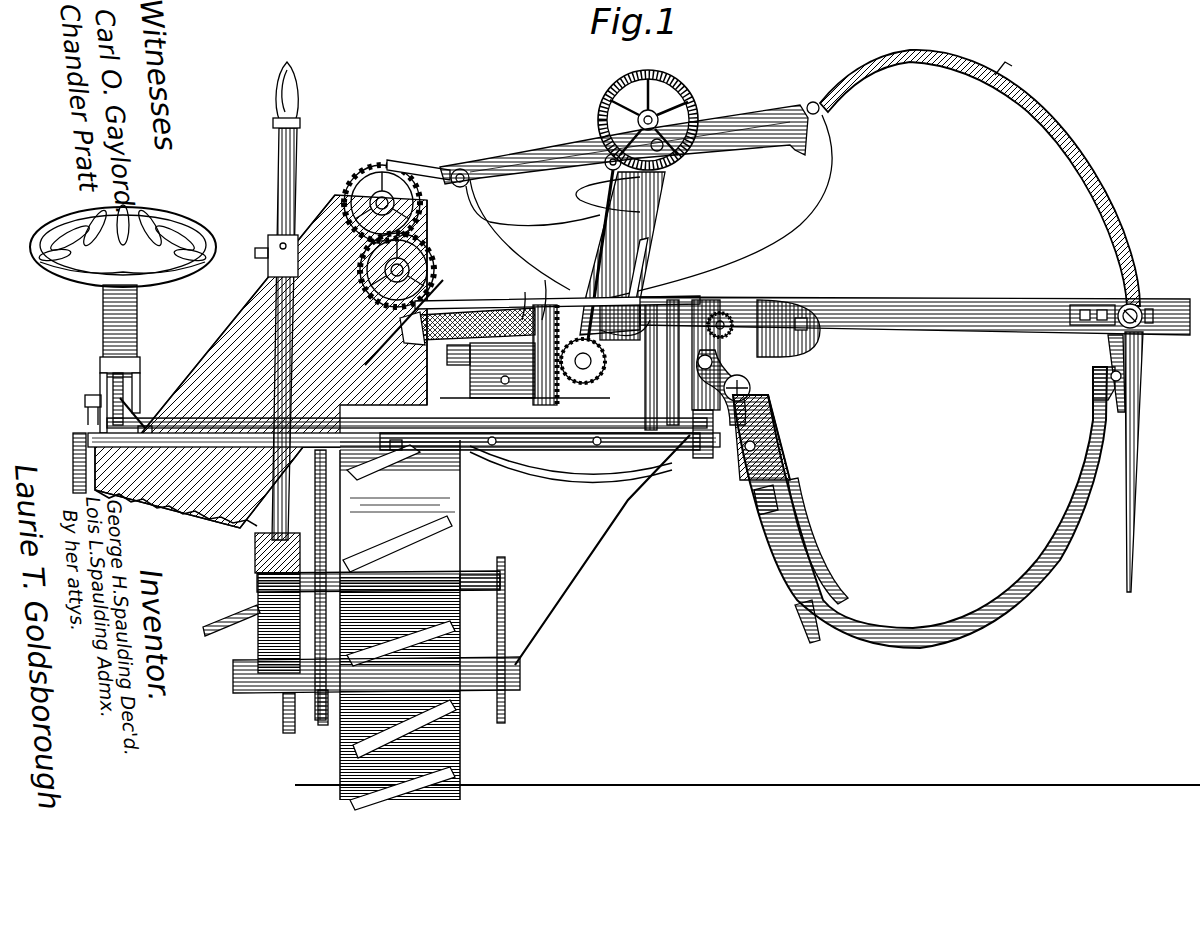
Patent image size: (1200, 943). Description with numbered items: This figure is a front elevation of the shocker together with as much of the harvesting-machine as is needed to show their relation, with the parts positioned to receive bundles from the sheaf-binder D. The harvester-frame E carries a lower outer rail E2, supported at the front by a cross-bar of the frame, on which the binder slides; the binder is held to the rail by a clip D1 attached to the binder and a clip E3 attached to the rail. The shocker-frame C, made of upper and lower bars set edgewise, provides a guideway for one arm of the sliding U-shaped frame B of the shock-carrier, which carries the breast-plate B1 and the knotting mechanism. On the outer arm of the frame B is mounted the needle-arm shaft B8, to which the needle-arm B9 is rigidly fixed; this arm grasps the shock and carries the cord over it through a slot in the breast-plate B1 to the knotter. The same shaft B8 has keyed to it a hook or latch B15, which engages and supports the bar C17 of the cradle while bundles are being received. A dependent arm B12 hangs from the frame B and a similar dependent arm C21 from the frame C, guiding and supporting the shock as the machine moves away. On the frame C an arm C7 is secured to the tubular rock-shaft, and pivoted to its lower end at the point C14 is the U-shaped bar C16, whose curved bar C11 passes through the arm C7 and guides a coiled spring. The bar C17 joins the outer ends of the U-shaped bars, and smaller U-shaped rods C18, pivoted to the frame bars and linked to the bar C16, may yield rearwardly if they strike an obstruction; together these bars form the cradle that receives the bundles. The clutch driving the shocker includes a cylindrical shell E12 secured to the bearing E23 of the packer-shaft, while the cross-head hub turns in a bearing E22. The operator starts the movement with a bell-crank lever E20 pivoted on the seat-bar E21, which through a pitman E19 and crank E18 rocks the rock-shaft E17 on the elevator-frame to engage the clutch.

The bell-crank lever E20 is at (104, 364).
The crank E18 is at (98, 408).
The rock-shaft E17 is at (148, 428).
The harvester-frame E is at (467, 448).
The clip D1 is at (412, 318).
The sheaf-binder D is at (700, 410).
The pitman E19 is at (406, 336).
The cylindrical shell E12 is at (543, 317).
The bearing E22 is at (500, 398).
The bearing E23 is at (567, 415).
The clip E3 is at (685, 422).
The lower outer rail E2 is at (697, 463).
The seat-bar E21 is at (600, 538).
The shocker-frame C is at (727, 323).
The breast-plate B1 is at (783, 333).
The U-shaped frame B is at (757, 343).
The needle-arm shaft B8 is at (1132, 317).
The needle-arm B9 is at (1040, 118).
The dependent arm B12 is at (1140, 447).
The hook or latch B15 is at (1133, 352).
The bar C17 is at (1113, 370).
The U-shaped bar C16 is at (963, 636).
The dependent arm C21 is at (762, 407).
The arm C7 is at (765, 427).
The curved bar C11 is at (755, 448).
The pivot point C14 is at (760, 507).
The smaller U-shaped rod C18 is at (823, 570).